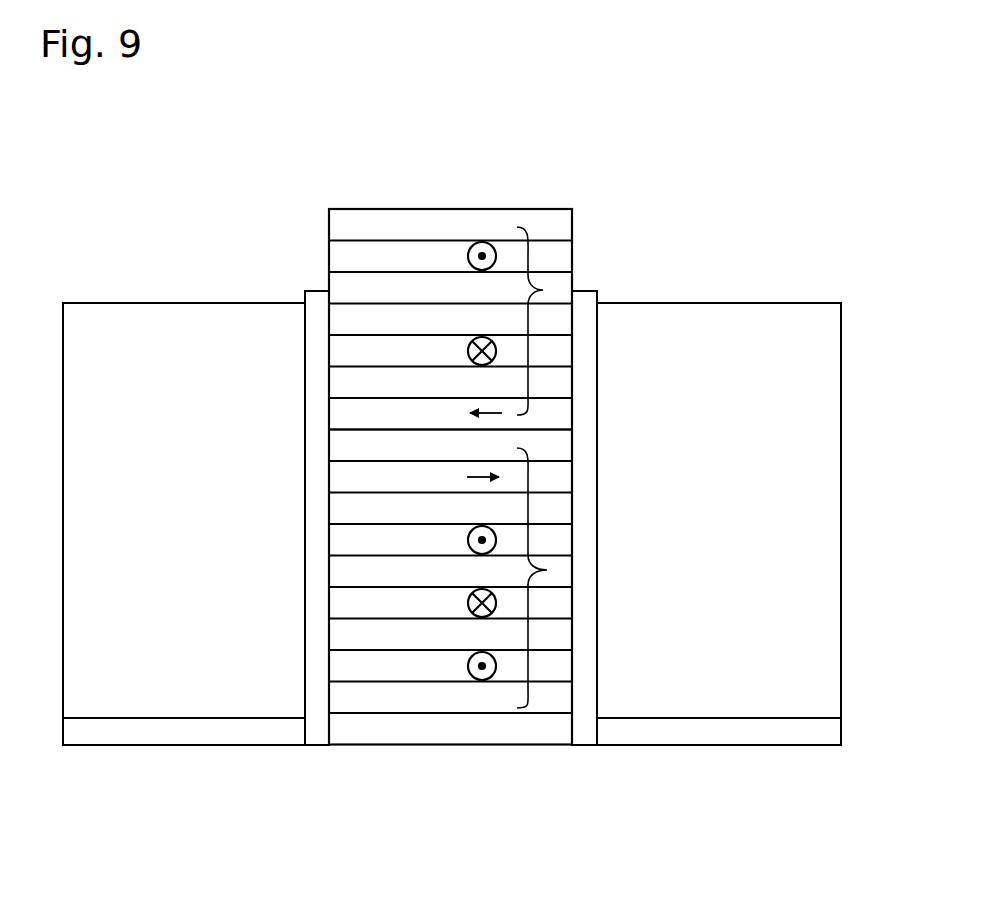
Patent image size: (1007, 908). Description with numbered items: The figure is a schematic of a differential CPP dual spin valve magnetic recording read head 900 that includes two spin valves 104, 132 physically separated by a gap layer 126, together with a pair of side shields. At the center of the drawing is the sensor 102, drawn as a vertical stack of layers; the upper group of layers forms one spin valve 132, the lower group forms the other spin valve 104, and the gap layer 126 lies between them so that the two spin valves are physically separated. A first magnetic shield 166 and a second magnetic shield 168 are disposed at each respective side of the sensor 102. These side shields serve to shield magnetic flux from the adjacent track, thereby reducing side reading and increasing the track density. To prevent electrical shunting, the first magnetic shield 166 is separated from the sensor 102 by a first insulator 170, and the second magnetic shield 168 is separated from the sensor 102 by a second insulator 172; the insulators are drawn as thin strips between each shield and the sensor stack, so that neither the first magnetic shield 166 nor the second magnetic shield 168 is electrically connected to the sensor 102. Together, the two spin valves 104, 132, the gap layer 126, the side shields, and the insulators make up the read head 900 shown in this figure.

The differential CPP dual spin valve magnetic recording read head 900 is at (297, 107).
The sensor 102 is at (568, 200).
The gap layer 126 is at (560, 438).
The spin valve 132 is at (543, 290).
The spin valve 104 is at (547, 570).
The first magnetic shield 166 is at (197, 318).
The second magnetic shield 168 is at (797, 318).
The first insulator 170 is at (326, 715).
The second insulator 172 is at (579, 715).